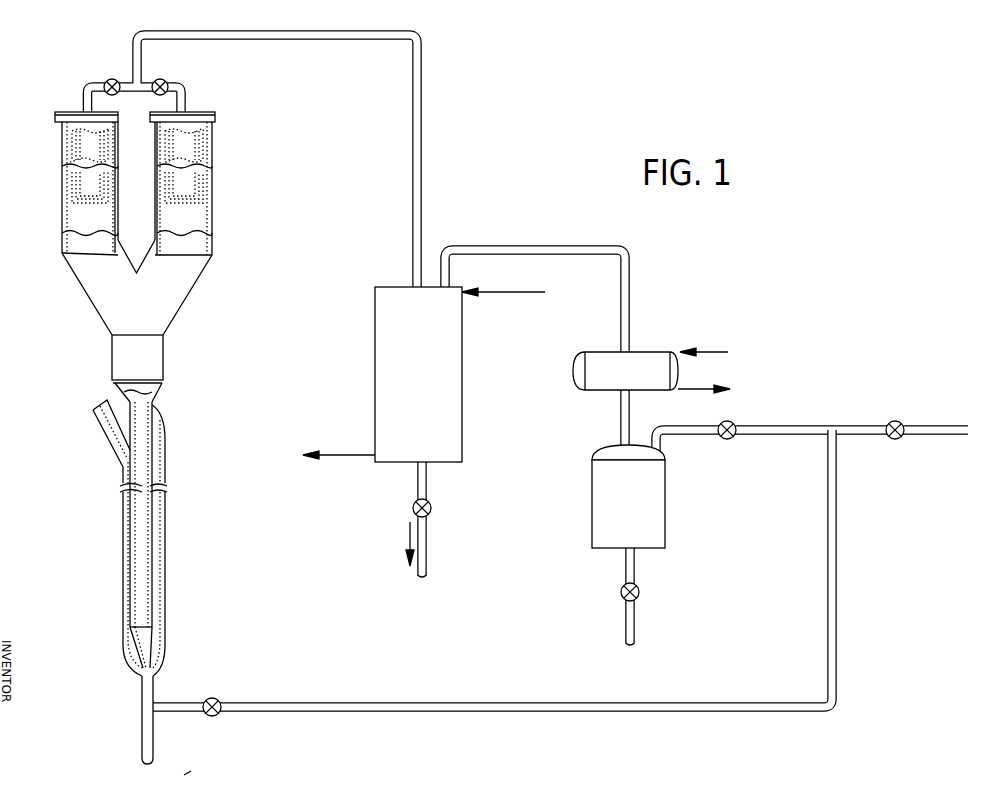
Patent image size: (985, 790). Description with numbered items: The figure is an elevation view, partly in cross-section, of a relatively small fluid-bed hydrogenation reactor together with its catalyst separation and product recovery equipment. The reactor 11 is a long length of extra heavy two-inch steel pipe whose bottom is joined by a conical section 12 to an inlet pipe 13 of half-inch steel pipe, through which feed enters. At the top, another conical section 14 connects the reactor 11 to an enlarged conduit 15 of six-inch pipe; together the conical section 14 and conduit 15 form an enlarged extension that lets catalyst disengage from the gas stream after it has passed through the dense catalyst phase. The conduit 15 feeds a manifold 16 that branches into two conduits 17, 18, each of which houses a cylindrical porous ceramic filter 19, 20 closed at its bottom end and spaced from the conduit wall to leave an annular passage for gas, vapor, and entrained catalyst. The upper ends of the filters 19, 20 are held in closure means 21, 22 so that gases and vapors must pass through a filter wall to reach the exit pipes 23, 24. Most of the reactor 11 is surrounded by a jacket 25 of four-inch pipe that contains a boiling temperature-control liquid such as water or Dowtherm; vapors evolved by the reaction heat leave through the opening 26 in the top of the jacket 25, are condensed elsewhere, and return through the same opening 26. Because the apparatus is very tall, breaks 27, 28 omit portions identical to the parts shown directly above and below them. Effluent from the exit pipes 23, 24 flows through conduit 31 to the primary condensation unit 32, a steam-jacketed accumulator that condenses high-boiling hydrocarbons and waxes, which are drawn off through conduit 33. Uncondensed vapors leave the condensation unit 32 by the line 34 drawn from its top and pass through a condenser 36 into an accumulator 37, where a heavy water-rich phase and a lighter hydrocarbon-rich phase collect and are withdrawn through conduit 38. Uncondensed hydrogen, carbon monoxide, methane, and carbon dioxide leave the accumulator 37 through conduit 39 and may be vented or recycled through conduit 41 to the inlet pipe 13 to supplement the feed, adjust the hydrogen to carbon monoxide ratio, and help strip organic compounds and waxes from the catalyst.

The reactor 11 is at (152, 416).
The conical section 12 is at (141, 648).
The inlet pipe 13 is at (143, 691).
The conical section 14 is at (158, 397).
The enlarged conduit 15 is at (125, 355).
The manifold 16 is at (172, 300).
The conduit 17 is at (62, 193).
The conduit 18 is at (212, 222).
The filter 19 is at (62, 150).
The filter 20 is at (212, 190).
The closure means 21 is at (55, 118).
The closure means 22 is at (215, 119).
The exit pipe 23 is at (84, 99).
The exit pipe 24 is at (184, 100).
The jacket 25 is at (123, 588).
The opening 26 is at (108, 431).
The break 27 is at (167, 485).
The break 28 is at (213, 163).
The conduit 31 is at (290, 36).
The primary condensation unit 32 is at (387, 287).
The conduit 33 is at (417, 489).
The connecting pipe 34 is at (555, 228).
The condenser 36 is at (647, 365).
The accumulator 37 is at (592, 488).
The conduit 38 is at (636, 572).
The conduit 39 is at (807, 412).
The conduit 41 is at (833, 651).